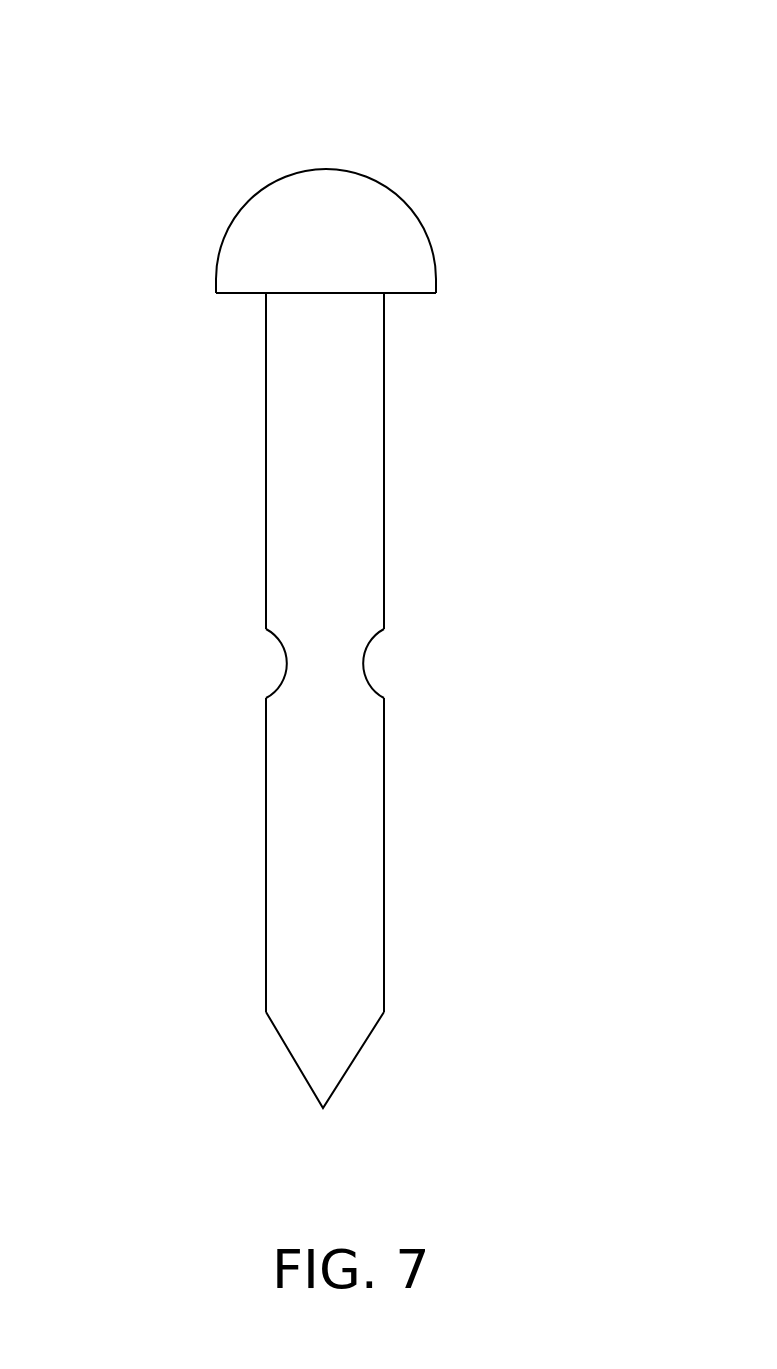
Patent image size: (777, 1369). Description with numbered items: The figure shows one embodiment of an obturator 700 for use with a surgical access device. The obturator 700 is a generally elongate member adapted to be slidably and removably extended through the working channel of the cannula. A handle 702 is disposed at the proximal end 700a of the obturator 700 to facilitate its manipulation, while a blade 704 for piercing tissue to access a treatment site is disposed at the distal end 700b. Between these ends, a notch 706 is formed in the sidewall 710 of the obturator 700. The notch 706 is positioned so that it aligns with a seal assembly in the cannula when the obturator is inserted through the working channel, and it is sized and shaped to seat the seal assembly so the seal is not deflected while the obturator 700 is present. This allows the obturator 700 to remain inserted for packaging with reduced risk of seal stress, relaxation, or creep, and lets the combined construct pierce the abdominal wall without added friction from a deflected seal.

The obturator 700 is at (339, 593).
The handle 702 is at (381, 196).
The blade 704 is at (323, 1108).
The notch 706 is at (413, 665).
The sidewall 710 is at (384, 478).
The proximal end 700a is at (437, 307).
The distal end 700b is at (429, 873).